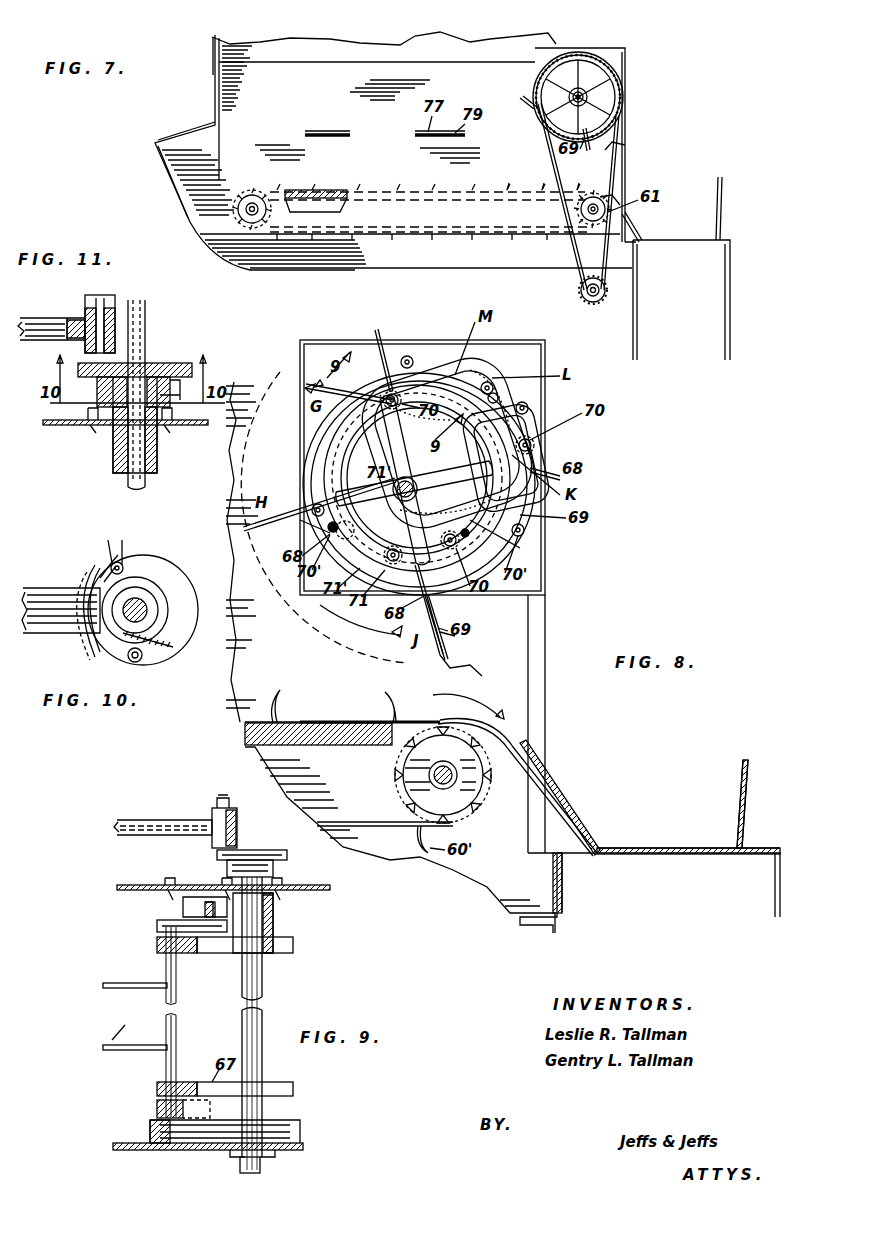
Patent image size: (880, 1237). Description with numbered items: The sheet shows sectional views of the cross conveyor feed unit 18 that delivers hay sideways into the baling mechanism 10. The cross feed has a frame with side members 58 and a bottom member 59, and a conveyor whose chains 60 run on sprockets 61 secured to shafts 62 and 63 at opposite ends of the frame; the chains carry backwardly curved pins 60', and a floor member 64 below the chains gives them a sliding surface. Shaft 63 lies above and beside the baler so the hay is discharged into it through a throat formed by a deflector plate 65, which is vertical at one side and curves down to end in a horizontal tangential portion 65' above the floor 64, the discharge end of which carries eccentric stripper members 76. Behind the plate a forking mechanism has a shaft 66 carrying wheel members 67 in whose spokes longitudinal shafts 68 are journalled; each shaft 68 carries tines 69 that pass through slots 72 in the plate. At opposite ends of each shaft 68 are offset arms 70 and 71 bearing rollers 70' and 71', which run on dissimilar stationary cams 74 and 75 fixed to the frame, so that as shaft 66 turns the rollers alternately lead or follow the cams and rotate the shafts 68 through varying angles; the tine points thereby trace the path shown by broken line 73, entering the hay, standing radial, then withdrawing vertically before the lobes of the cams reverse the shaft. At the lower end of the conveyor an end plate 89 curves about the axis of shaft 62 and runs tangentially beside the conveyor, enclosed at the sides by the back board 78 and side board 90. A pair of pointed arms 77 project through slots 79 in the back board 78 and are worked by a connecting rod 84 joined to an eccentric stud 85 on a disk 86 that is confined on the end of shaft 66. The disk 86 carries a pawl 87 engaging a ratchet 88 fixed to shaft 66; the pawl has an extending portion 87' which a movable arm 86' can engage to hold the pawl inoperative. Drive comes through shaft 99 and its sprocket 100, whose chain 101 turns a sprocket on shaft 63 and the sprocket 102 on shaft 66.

In FIG. 7, the baling mechanism 10 is at (640, 303).
In FIG. 8, the baling mechanism 10 is at (773, 868).
In FIG. 7, the cross conveyor feed unit 18 is at (214, 96).
In FIG. 8, the cross conveyor feed unit 18 is at (247, 722).
In FIG. 7, the side members 58 is at (312, 56).
In FIG. 8, the side members 58 is at (240, 384).
In FIG. 7, the bottom member 59 is at (300, 262).
In FIG. 7, the chains 60 is at (410, 200).
In FIG. 8, the chains 60 is at (376, 754).
In FIG. 7, the pins 60' is at (528, 175).
In FIG. 8, the pins 60' is at (350, 757).
In FIG. 7, the sprockets 61 is at (238, 212).
In FIG. 8, the sprockets 61 is at (478, 812).
In FIG. 7, the shaft 62 is at (240, 199).
In FIG. 7, the shaft 63 is at (614, 198).
In FIG. 8, the shaft 63 is at (455, 753).
In FIG. 7, the floor member 64 is at (325, 192).
In FIG. 8, the floor member 64 is at (345, 747).
In FIG. 7, the deflector plate 65 is at (578, 77).
In FIG. 7, the horizontal tangential portion 65' is at (645, 135).
In FIG. 8, the horizontal tangential portion 65' is at (422, 596).
In FIG. 7, the shaft 66 is at (588, 96).
In FIG. 8, the shaft 66 is at (402, 500).
In FIG. 11, the shaft 66 is at (128, 478).
In FIG. 10, the shaft 66 is at (148, 606).
In FIG. 9, the shaft 66 is at (263, 978).
In FIG. 8, the wheel members 67 is at (505, 540).
In FIG. 9, the wheel members 67 is at (215, 953).
In FIG. 8, the longitudinal shafts 68 is at (380, 345).
In FIG. 9, the longitudinal shafts 68 is at (178, 1033).
In FIG. 7, the tines 69 is at (527, 100).
In FIG. 8, the tines 69 is at (290, 524).
In FIG. 9, the tines 69 is at (128, 1000).
In FIG. 8, the arm 70 is at (457, 452).
In FIG. 9, the arm 70 is at (166, 930).
In FIG. 8, the roller 70' is at (459, 469).
In FIG. 9, the roller 70' is at (160, 913).
In FIG. 8, the arm 71 is at (386, 478).
In FIG. 9, the arm 71 is at (147, 1105).
In FIG. 8, the roller 71' is at (433, 453).
In FIG. 9, the roller 71' is at (225, 1117).
In FIG. 8, the slots 72 is at (318, 452).
In FIG. 8, the broken line 73 is at (470, 667).
In FIG. 8, the stationary cam 74 is at (505, 434).
In FIG. 9, the stationary cam 74 is at (183, 905).
In FIG. 8, the stationary cam 75 is at (472, 372).
In FIG. 9, the stationary cam 75 is at (150, 1135).
In FIG. 7, the stripper members 76 is at (633, 226).
In FIG. 8, the stripper members 76 is at (528, 745).
In FIG. 7, the pointed arms 77 is at (313, 132).
In FIG. 7, the back board 78 is at (432, 98).
In FIG. 11, the back board 78 is at (65, 428).
In FIG. 9, the back board 78 is at (138, 885).
In FIG. 7, the slots 79 is at (342, 133).
In FIG. 11, the connecting rod 84 is at (45, 318).
In FIG. 10, the connecting rod 84 is at (60, 590).
In FIG. 9, the connecting rod 84 is at (140, 823).
In FIG. 11, the stud 85 is at (105, 300).
In FIG. 9, the stud 85 is at (223, 795).
In FIG. 11, the disk 86 is at (135, 356).
In FIG. 10, the disk 86 is at (151, 610).
In FIG. 9, the disk 86 is at (256, 844).
In FIG. 10, the movable arm 86' is at (130, 546).
In FIG. 10, the pawl 87 is at (101, 618).
In FIG. 9, the pawl 87 is at (268, 867).
In FIG. 10, the extending portion 87' is at (95, 557).
In FIG. 11, the ratchet 88 is at (97, 395).
In FIG. 10, the ratchet 88 is at (145, 590).
In FIG. 7, the end plate 89 is at (170, 176).
In FIG. 7, the side board 90 is at (180, 136).
In FIG. 7, the shaft 99 is at (581, 293).
In FIG. 7, the sprocket 100 is at (594, 302).
In FIG. 7, the chain 101 is at (568, 249).
In FIG. 7, the sprocket 102 is at (620, 114).